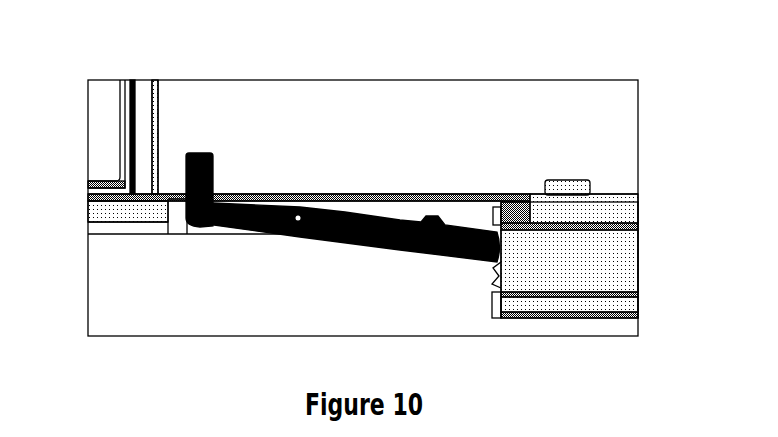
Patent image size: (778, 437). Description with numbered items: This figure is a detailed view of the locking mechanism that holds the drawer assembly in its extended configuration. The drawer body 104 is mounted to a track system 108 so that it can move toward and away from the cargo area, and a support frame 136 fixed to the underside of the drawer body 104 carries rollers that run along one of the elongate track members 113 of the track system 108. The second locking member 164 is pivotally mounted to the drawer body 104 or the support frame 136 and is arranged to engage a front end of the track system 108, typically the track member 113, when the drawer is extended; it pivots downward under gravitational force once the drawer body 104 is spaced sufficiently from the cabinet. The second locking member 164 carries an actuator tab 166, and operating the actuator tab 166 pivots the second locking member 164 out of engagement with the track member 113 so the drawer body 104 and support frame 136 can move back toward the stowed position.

The drawer body 104 is at (181, 200).
The track system 108 is at (577, 255).
The track member 113 is at (587, 210).
The support frame 136 is at (197, 229).
The second locking member 164 is at (254, 229).
The actuator tab 166 is at (198, 153).